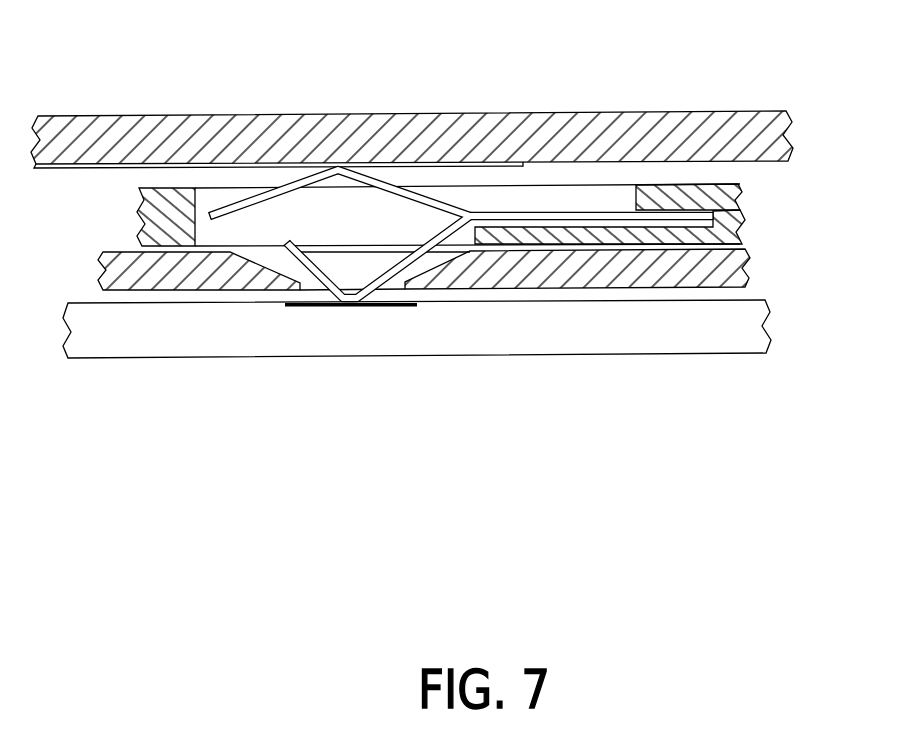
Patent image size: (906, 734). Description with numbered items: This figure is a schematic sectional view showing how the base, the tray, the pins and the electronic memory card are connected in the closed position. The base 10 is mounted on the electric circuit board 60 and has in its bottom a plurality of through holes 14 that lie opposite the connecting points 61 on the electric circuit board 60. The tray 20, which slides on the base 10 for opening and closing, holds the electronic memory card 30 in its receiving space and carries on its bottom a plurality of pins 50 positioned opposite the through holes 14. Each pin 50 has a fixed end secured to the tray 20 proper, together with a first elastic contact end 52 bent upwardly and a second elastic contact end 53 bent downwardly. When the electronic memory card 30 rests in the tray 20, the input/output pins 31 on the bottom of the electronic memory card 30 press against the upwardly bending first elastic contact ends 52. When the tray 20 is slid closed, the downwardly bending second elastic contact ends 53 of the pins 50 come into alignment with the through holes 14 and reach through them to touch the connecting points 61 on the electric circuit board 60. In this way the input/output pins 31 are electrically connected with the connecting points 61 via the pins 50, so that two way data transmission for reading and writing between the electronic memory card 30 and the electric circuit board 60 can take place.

The base 10 is at (437, 345).
The through holes 14 is at (253, 288).
The tray 20 is at (680, 192).
The electronic memory card 30 is at (628, 123).
The input/output pins 31 is at (130, 165).
The pins 50 is at (461, 233).
The first elastic contact end 52 is at (295, 177).
The second elastic contact end 53 is at (323, 305).
The electric circuit board 60 is at (417, 369).
The connecting points 61 is at (337, 305).